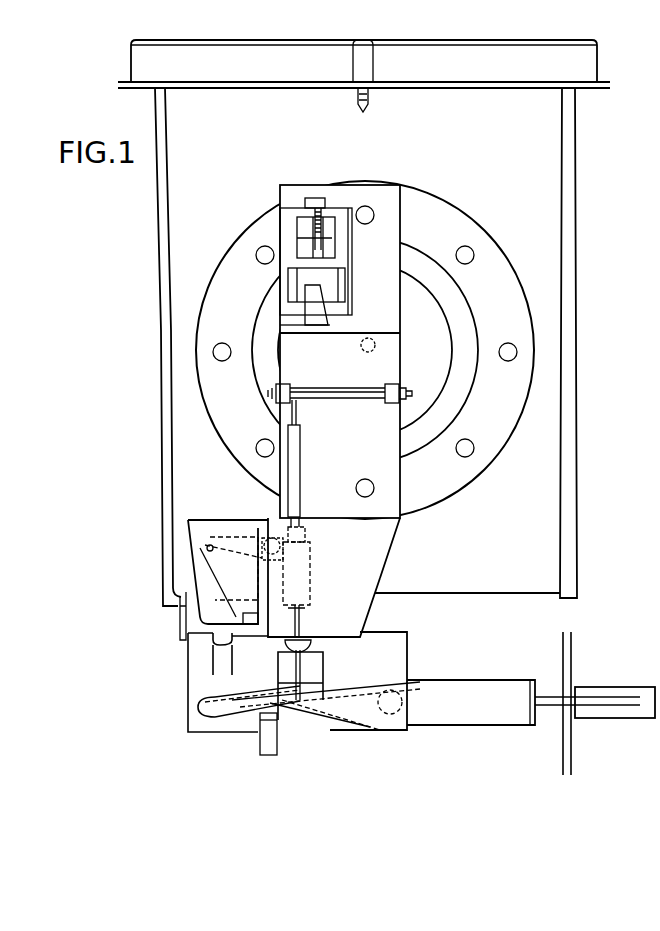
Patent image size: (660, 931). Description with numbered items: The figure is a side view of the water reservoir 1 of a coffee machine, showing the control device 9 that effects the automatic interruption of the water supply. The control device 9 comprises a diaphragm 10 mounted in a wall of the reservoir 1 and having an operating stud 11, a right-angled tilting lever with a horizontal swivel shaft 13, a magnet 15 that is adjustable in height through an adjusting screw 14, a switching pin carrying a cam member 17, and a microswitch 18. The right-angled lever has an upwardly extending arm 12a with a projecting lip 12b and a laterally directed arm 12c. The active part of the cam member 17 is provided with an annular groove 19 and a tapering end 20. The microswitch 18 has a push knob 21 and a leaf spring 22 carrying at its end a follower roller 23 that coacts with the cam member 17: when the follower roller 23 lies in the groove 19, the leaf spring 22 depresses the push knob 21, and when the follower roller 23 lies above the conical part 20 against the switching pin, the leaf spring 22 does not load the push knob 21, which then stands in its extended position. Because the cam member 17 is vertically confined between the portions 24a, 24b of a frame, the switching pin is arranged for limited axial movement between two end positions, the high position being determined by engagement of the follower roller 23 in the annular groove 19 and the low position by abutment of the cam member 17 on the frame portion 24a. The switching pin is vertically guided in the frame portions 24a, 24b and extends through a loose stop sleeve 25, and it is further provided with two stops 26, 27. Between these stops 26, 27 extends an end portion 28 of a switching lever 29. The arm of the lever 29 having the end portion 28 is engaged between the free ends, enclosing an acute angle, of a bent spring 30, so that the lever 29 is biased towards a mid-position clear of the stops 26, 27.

The water reservoir 1 is at (180, 184).
The control device 9 is at (272, 355).
The diaphragm 10 is at (445, 290).
The operating stud 11 is at (378, 343).
The upwardly extending arm 12a is at (312, 348).
The projecting lip 12b is at (313, 309).
The laterally directed arm 12c is at (355, 401).
The horizontal swivel shaft 13 is at (410, 393).
The adjusting screw 14 is at (318, 200).
The magnet 15 is at (308, 276).
The cam member 17 is at (310, 576).
The microswitch 18 is at (207, 575).
The annular groove 19 is at (308, 544).
The tapering end 20 is at (300, 532).
The push knob 21 is at (216, 541).
The leaf spring 22 is at (180, 608).
The follower roller 23 is at (275, 540).
The frame portion 24a is at (338, 637).
The frame portion 24b is at (336, 518).
The loose stop sleeve 25 is at (300, 436).
The stop 26 is at (285, 649).
The stop 27 is at (300, 712).
The end portion 28 is at (318, 705).
The switching lever 29 is at (470, 728).
The bent spring 30 is at (222, 712).